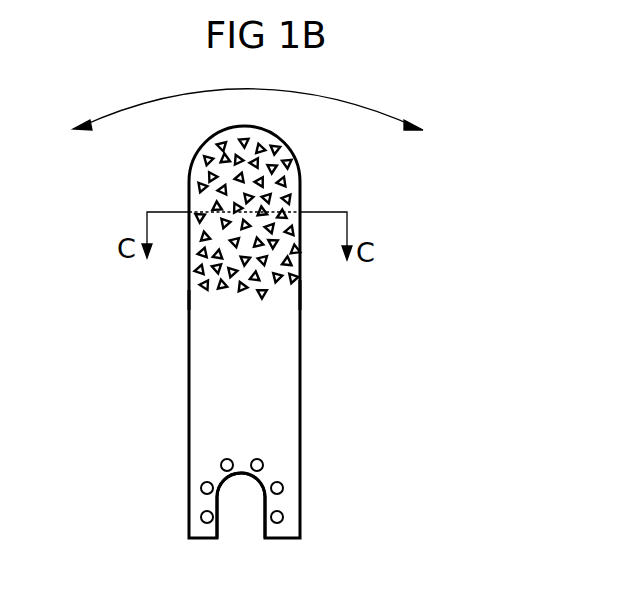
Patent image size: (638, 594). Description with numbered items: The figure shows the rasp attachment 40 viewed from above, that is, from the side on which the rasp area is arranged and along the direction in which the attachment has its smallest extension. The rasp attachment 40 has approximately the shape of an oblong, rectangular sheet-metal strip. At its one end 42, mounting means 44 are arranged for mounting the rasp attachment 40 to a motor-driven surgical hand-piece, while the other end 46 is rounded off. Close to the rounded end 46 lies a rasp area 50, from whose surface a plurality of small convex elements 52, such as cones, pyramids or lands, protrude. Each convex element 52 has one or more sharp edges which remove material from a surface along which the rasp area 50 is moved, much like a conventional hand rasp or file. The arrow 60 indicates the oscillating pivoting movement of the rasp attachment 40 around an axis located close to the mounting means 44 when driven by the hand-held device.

The rasp attachment 40 is at (157, 383).
The one end 42 is at (283, 518).
The mounting means 44 is at (247, 500).
The other end 46 is at (300, 183).
The rasp area 50 is at (287, 290).
The convex elements 52 is at (210, 298).
The arrow 60 is at (393, 112).